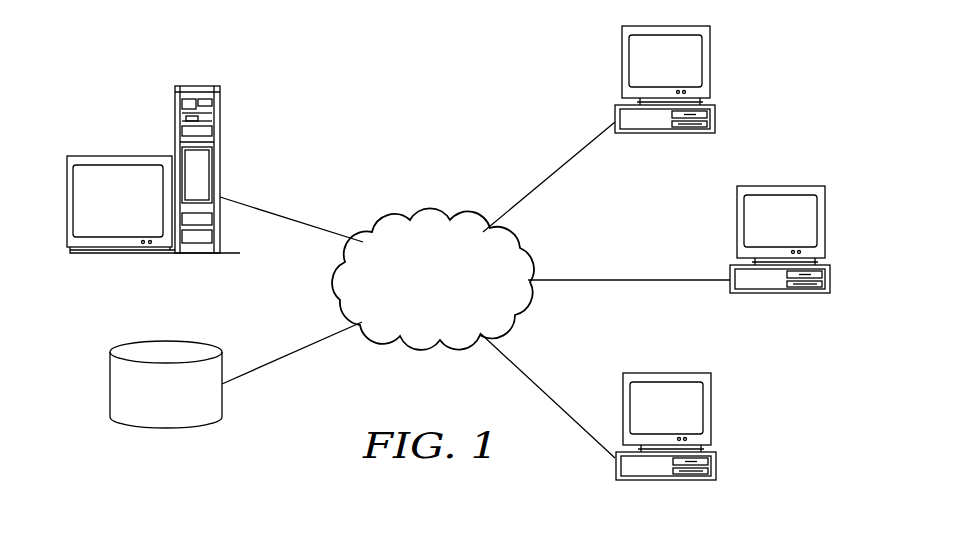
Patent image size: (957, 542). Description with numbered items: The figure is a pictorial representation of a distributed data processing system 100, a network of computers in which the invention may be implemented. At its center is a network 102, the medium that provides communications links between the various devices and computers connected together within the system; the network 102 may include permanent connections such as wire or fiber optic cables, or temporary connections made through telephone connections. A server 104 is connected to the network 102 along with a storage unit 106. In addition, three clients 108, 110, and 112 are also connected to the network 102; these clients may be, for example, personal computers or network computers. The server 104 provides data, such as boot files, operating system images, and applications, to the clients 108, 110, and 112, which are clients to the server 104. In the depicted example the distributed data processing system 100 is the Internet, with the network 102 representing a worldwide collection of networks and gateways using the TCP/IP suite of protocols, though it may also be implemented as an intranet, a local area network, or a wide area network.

The distributed data processing system 100 is at (306, 66).
The network 102 is at (453, 307).
The server 104 is at (177, 113).
The storage unit 106 is at (110, 387).
The client 108 is at (711, 72).
The client 110 is at (826, 229).
The client 112 is at (711, 413).